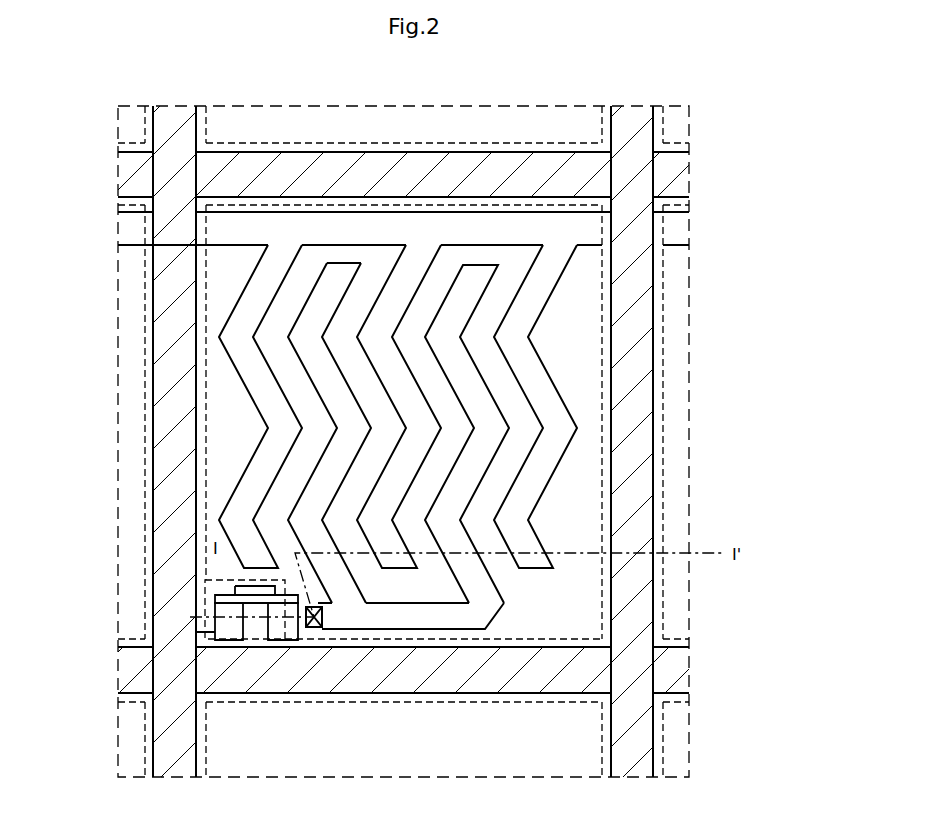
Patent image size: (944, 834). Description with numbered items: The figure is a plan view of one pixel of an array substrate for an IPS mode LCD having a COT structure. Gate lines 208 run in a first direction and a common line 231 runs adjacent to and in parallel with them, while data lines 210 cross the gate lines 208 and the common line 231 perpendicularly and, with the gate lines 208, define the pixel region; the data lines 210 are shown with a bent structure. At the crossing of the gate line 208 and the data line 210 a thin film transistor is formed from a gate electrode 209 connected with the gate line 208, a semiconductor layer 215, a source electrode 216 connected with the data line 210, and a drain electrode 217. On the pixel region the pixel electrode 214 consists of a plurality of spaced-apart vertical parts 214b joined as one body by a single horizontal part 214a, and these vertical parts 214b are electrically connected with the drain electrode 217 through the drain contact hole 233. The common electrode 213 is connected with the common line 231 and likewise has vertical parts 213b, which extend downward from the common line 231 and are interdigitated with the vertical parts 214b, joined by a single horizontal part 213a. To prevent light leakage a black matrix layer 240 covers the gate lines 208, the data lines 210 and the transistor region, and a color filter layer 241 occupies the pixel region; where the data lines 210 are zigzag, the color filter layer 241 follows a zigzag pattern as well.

The gate line 208 is at (320, 680).
The gate electrode 209 is at (207, 582).
The data line 210 is at (655, 417).
The common electrode 213 is at (431, 398).
The horizontal part 213a is at (513, 228).
The vertical parts 213b is at (404, 406).
The pixel electrode 214 is at (587, 446).
The horizontal part 214a is at (455, 618).
The vertical parts 214b is at (467, 468).
The semiconductor layer 215 is at (240, 645).
The source electrode 216 is at (223, 623).
The drain electrode 217 is at (262, 642).
The common line 231 is at (683, 229).
The drain contact hole 233 is at (318, 628).
The black matrix layer 240 is at (143, 326).
The color filter layer 241 is at (232, 436).